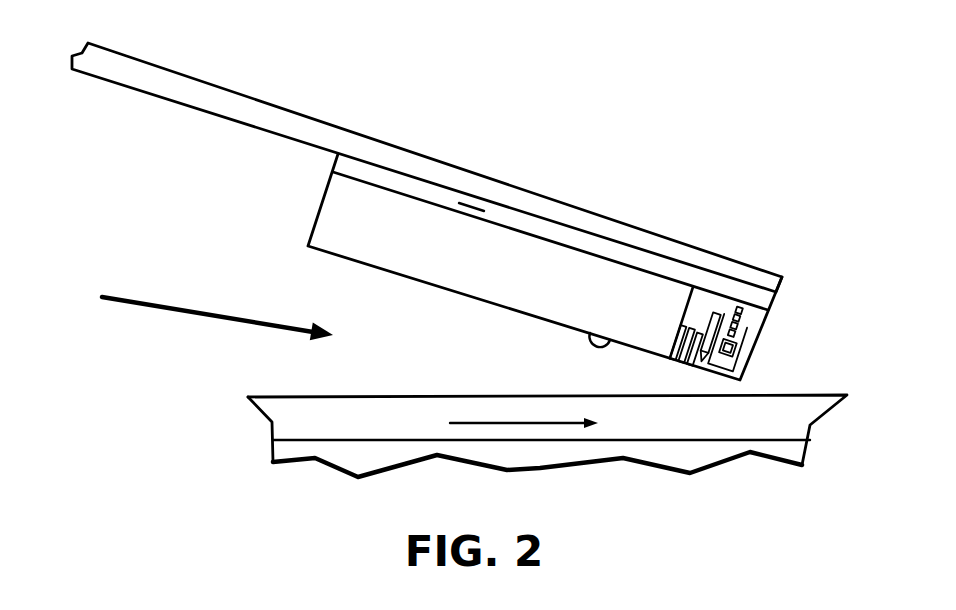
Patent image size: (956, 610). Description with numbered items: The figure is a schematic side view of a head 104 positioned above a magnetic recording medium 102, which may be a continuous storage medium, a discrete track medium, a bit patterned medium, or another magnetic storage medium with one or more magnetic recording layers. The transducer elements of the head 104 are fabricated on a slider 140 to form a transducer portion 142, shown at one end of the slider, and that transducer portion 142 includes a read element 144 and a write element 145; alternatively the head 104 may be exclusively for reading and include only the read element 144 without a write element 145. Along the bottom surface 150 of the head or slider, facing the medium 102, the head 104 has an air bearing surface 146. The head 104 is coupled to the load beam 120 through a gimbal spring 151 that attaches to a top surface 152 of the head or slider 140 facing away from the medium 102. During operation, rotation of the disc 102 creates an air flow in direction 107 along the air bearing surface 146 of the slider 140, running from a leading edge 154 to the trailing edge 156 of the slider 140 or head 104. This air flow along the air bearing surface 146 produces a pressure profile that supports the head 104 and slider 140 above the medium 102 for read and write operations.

The medium 102 is at (778, 428).
The head 104 is at (775, 274).
The air flow direction 107 is at (522, 423).
The load beam 120 is at (357, 145).
The slider 140 is at (508, 258).
The transducer portion 142 is at (735, 322).
The read element 144 is at (687, 345).
The write element 145 is at (709, 337).
The air bearing surface 146 is at (470, 311).
The bottom surface 150 is at (612, 333).
The gimbal spring 151 is at (473, 205).
The top surface 152 is at (610, 255).
The leading edge 154 is at (322, 204).
The trailing edge 156 is at (728, 342).